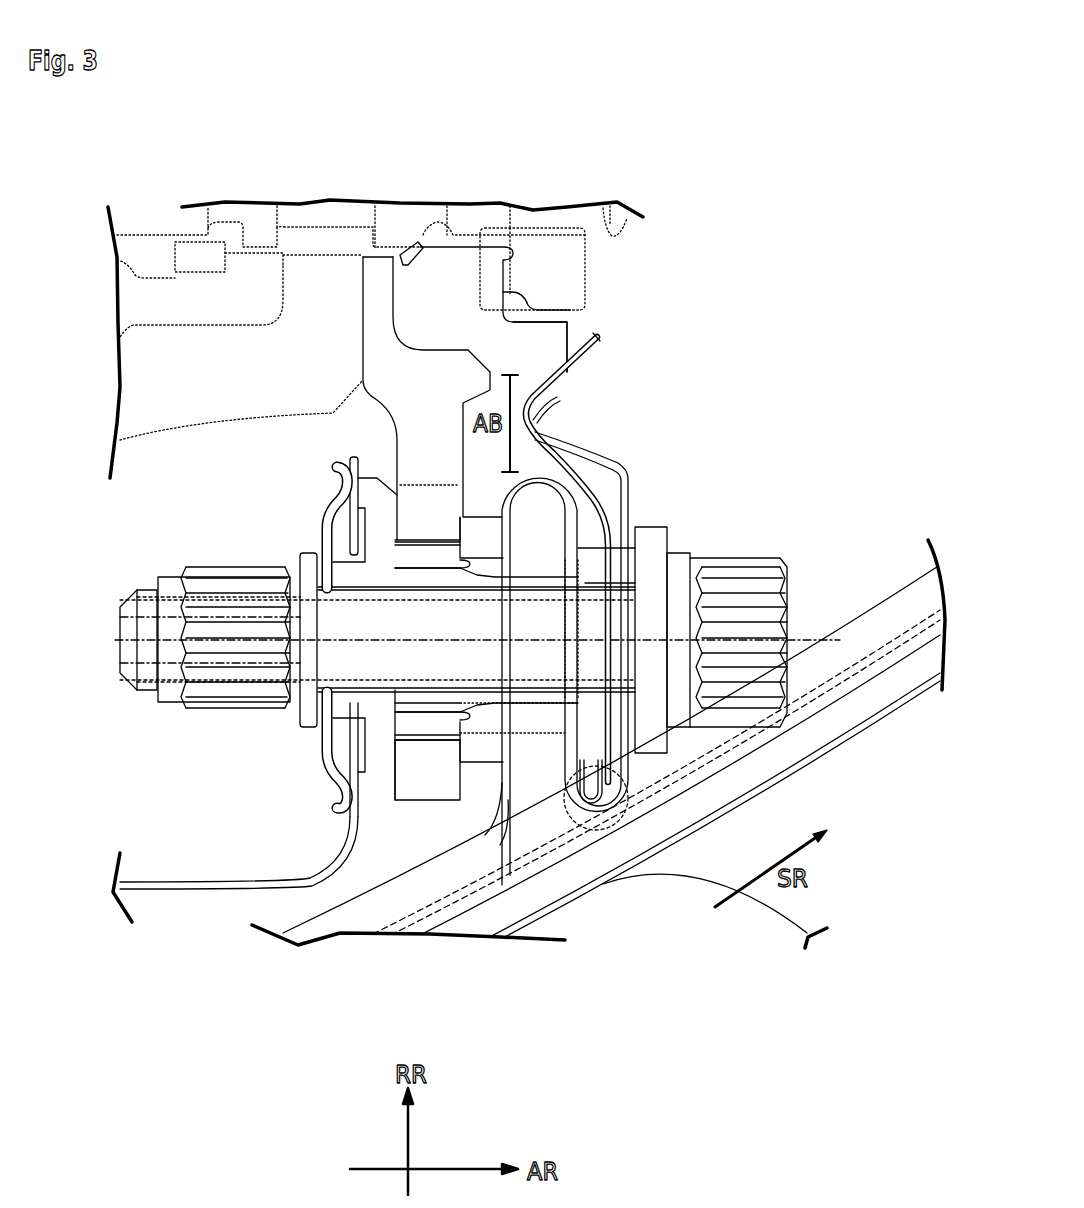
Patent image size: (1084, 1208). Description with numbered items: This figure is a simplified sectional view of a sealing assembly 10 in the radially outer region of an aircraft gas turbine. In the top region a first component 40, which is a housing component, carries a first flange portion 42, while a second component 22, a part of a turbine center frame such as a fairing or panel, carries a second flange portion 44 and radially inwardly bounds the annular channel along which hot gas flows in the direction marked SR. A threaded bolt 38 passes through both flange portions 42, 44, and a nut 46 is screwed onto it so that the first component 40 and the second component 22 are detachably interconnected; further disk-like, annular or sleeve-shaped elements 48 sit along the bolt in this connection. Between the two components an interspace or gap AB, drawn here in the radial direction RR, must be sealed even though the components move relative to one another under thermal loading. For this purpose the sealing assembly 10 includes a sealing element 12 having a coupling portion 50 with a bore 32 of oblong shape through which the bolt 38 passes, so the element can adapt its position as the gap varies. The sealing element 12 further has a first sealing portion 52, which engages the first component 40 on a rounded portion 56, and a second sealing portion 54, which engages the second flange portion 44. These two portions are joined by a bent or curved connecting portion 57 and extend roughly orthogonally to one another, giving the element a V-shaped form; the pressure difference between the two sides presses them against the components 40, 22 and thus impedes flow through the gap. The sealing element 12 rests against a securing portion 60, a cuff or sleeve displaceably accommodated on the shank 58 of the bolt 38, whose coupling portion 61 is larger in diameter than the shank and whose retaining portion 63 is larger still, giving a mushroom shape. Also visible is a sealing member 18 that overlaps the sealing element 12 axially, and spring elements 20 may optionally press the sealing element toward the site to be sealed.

The sealing assembly 10 is at (690, 399).
The sealing element 12 is at (635, 530).
The sealing member 18 is at (640, 513).
The spring elements 20 is at (628, 778).
The second component 22 is at (777, 758).
The bore 32 is at (600, 740).
The bolt 38 is at (368, 658).
The first component 40 is at (455, 292).
The first flange portion 42 is at (420, 467).
The second flange portion 44 is at (606, 530).
The nut 46 is at (223, 663).
The disk-like, annular or sleeve-shaped elements 48 is at (375, 742).
The coupling portion 50 is at (600, 762).
The first sealing portion 52 is at (580, 360).
The second sealing portion 54 is at (563, 472).
The rounded portion 56 is at (540, 355).
The connecting portion 57 is at (530, 425).
The shank 58 is at (458, 635).
The securing portion 60 is at (662, 612).
The coupling portion 61 is at (617, 723).
The retaining portion 63 is at (650, 560).